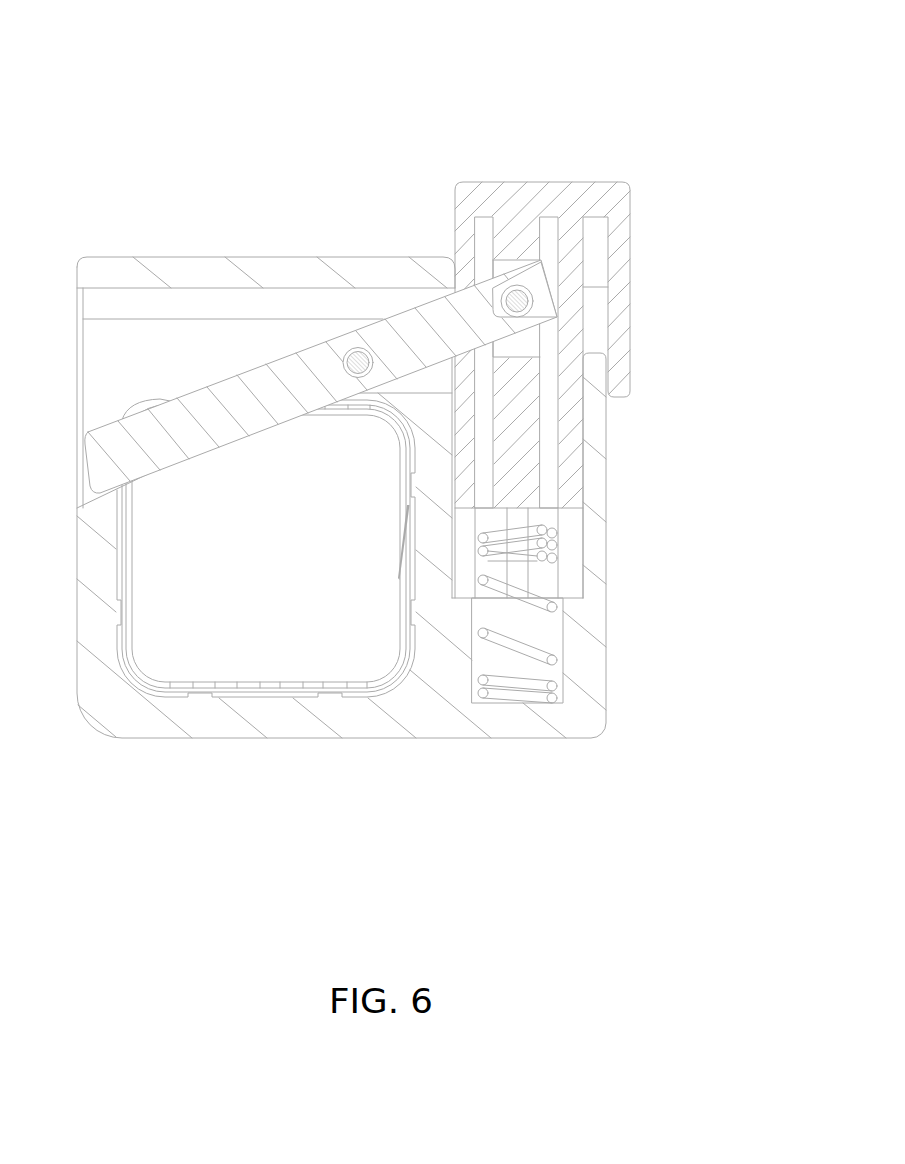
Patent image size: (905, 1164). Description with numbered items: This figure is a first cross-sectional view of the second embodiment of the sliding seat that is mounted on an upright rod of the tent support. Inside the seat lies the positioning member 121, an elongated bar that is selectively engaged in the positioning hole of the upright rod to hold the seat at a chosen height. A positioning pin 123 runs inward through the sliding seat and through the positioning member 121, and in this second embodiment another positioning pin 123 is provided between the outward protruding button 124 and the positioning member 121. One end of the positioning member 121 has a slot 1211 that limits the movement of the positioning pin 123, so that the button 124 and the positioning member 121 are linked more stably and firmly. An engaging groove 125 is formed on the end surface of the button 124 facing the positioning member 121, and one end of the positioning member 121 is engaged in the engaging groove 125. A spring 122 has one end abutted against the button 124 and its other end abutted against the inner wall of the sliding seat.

The positioning member 121 is at (208, 413).
The slot 1211 is at (500, 306).
The positioning pin 123 is at (360, 349).
The button 124 is at (605, 193).
The engaging groove 125 is at (535, 345).
The spring 122 is at (555, 558).